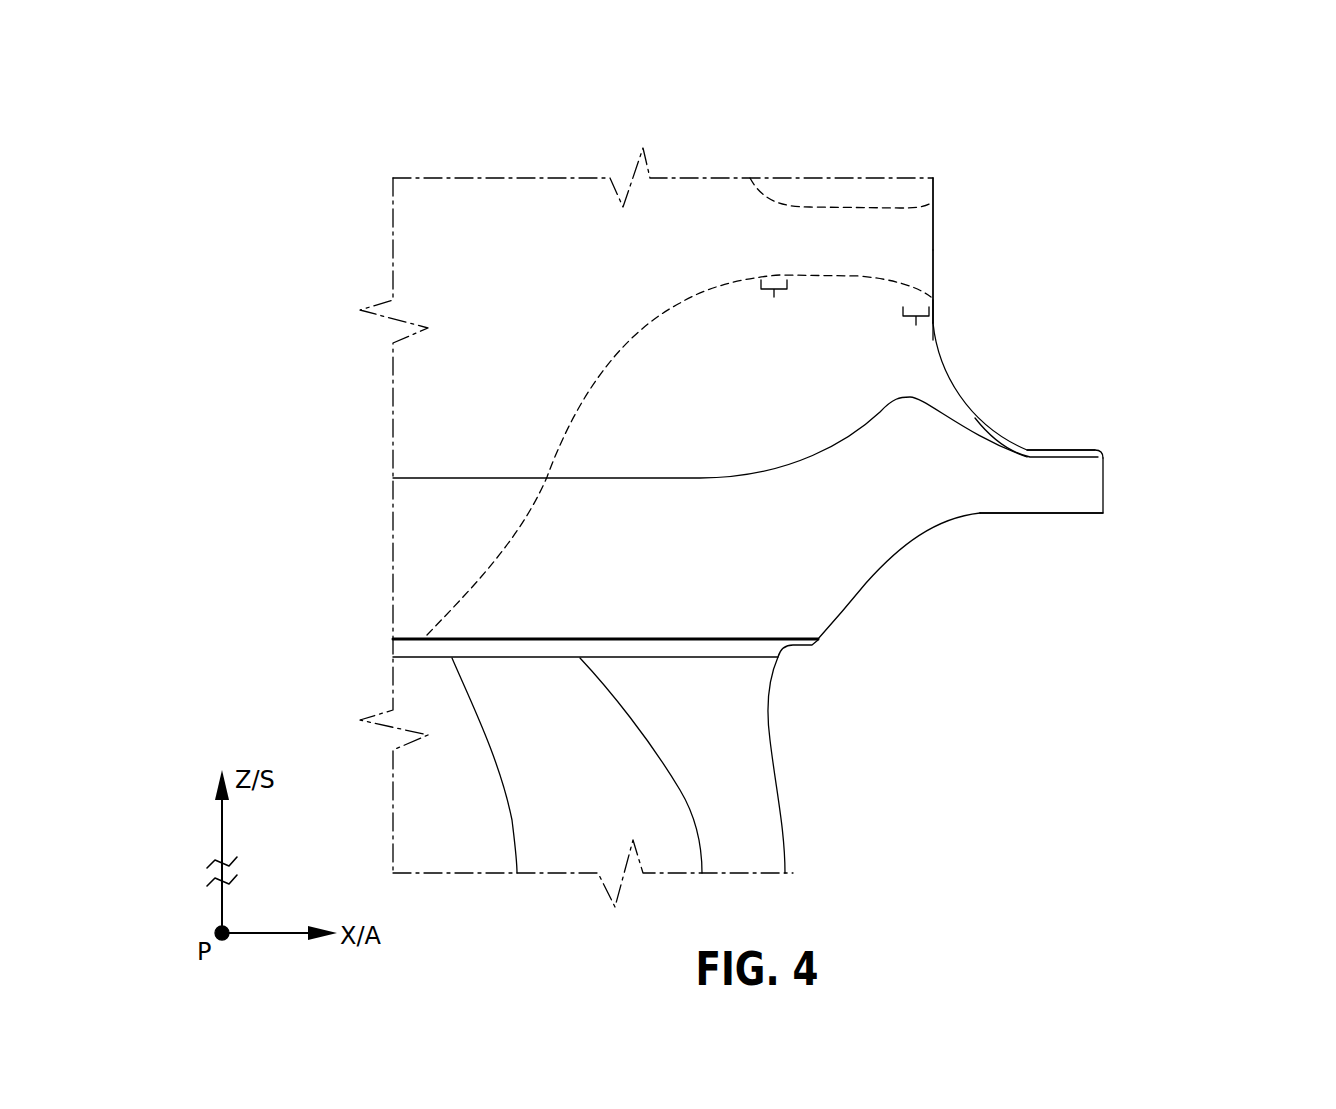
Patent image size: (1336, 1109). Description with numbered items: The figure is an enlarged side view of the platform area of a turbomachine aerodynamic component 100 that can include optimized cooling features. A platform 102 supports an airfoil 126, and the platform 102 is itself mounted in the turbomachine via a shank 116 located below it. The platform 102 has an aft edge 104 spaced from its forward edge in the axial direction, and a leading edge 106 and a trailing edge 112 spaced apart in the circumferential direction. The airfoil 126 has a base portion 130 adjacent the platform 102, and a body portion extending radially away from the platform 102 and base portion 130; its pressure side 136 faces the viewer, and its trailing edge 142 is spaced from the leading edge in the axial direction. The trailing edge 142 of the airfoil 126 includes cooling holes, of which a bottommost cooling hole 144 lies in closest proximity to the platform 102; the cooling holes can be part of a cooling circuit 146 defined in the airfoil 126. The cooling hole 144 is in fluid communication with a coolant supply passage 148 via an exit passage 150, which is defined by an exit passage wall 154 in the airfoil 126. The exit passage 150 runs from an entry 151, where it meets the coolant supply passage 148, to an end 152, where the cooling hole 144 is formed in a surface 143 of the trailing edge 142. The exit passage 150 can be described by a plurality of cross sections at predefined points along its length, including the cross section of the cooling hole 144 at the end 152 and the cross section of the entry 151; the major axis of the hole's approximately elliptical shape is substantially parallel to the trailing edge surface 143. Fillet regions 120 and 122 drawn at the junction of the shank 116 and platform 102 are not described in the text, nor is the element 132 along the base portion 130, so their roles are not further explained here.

The turbomachine aerodynamic component 100 is at (407, 148).
The platform 102 is at (1130, 486).
The aft edge 104 is at (1052, 513).
The leading edge 106 is at (1085, 448).
The trailing edge 112 is at (871, 502).
The shank 116 is at (812, 812).
The first fillet 120 is at (479, 838).
The second fillet 122 is at (743, 768).
The airfoil 126 is at (893, 185).
The base portion 130 is at (947, 360).
The inner surface 132 is at (975, 417).
The pressure side 136 is at (622, 412).
The trailing edge 142 is at (937, 331).
The trailing edge surface 143 is at (958, 183).
The cooling hole 144 is at (958, 248).
The cooling circuit 146 is at (527, 224).
The coolant supply passage 148 is at (602, 281).
The exit passage 150 is at (830, 204).
The entry 151 is at (774, 298).
The end 152 is at (916, 326).
The exit passage wall 154 is at (772, 226).